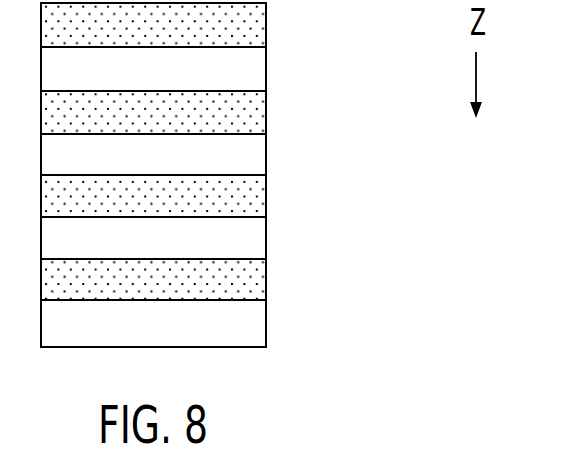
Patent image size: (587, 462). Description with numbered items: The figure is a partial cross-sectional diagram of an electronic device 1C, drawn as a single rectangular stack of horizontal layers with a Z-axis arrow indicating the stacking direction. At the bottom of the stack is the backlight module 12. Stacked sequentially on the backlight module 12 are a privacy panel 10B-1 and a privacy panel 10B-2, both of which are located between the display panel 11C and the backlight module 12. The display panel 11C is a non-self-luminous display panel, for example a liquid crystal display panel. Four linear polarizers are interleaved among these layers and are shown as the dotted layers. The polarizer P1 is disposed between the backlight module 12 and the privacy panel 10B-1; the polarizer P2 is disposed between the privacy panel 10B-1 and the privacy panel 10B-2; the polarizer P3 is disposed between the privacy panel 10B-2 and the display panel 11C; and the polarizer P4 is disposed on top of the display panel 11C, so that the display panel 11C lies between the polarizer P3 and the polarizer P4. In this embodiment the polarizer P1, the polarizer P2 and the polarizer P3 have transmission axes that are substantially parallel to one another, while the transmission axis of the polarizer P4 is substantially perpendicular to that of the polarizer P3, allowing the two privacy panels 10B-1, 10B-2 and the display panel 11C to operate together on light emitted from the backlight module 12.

The electronic device 1C is at (336, 394).
The polarizer P4 is at (258, 25).
The display panel 11C is at (257, 71).
The polarizer P3 is at (258, 111).
The privacy panel 10B-2 is at (257, 151).
The polarizer P2 is at (258, 198).
The privacy panel 10B-1 is at (257, 235).
The polarizer P1 is at (258, 280).
The backlight module 12 is at (257, 323).